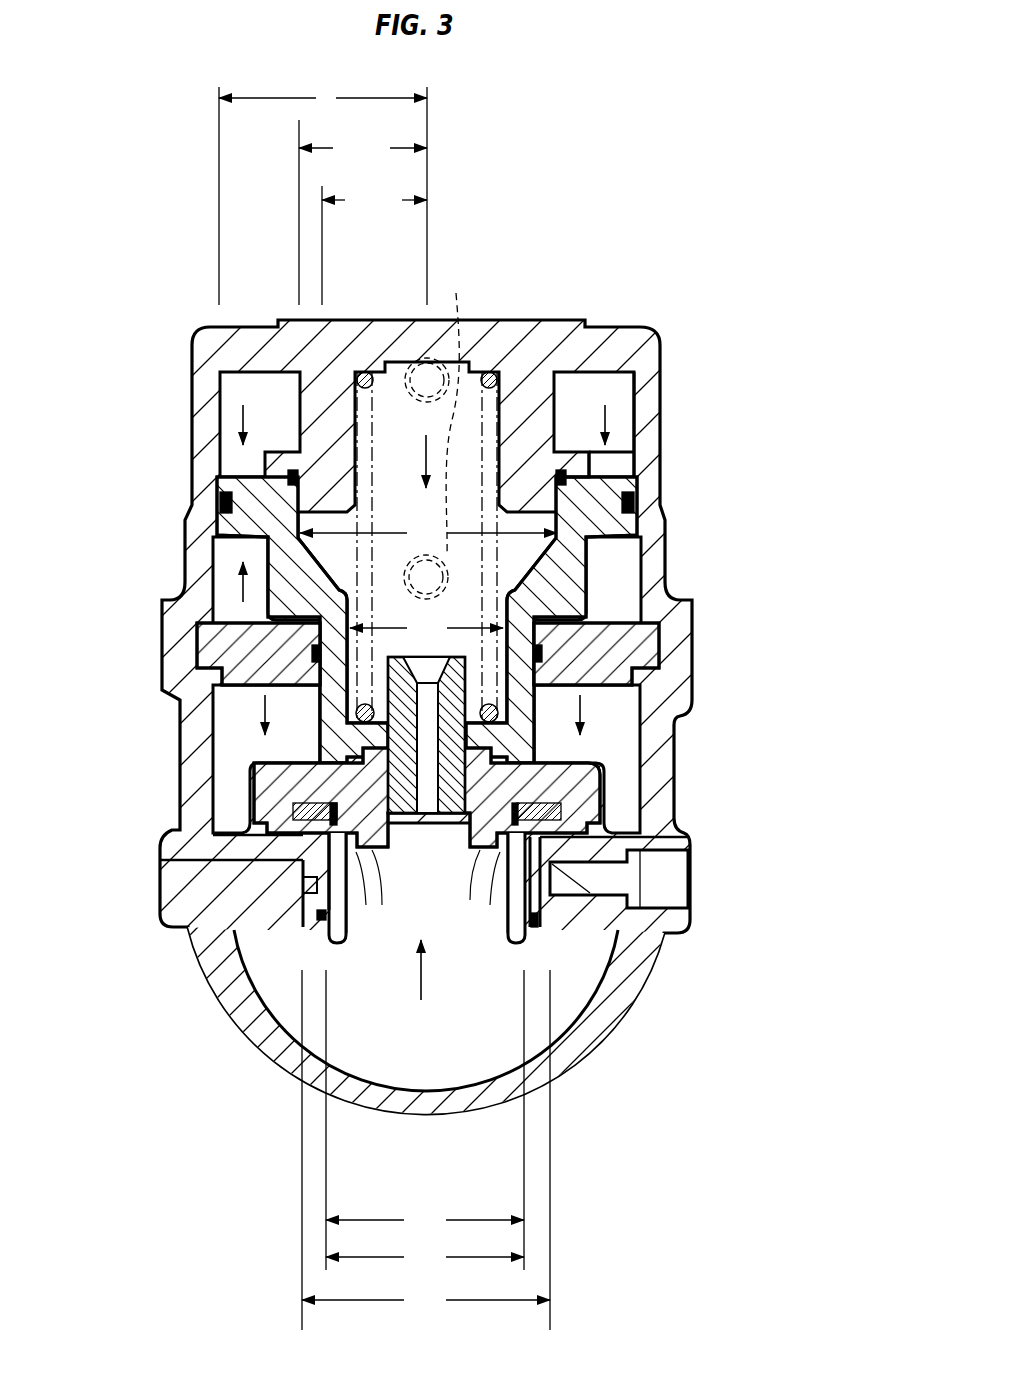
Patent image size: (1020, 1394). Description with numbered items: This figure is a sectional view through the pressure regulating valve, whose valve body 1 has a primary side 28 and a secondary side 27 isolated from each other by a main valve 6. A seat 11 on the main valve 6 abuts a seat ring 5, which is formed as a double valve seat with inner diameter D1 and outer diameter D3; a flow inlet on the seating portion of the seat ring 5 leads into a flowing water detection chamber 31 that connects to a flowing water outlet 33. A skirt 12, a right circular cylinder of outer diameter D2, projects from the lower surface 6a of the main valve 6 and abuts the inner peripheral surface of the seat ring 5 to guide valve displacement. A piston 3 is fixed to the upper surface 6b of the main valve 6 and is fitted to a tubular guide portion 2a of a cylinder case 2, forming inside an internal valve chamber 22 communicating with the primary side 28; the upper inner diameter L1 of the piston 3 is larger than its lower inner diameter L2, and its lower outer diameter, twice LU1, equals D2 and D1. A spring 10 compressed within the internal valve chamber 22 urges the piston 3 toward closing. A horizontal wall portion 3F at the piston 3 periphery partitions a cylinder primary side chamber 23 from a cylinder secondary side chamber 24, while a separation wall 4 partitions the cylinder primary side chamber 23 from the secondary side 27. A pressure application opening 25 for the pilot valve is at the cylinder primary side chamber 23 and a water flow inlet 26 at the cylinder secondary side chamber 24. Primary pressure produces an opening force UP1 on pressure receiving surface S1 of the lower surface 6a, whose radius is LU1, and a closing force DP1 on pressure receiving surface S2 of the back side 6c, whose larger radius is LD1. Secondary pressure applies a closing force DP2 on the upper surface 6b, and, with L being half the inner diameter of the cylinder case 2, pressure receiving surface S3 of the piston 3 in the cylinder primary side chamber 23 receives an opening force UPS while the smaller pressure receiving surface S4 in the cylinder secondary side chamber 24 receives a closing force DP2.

The housing body 1 is at (187, 937).
The cylinder case 2 is at (612, 487).
The tubular guide portion 2a is at (575, 455).
The piston 3 is at (588, 440).
The horizontal wall portion 3F is at (615, 470).
The separation wall 4 is at (647, 653).
The seat ring 5 is at (532, 930).
The main valve 6 is at (517, 943).
The lower surface 6a is at (384, 945).
The upper surface 6b is at (300, 762).
The back side 6c is at (585, 582).
The spring 10 is at (375, 345).
The seat 11 is at (546, 790).
The skirt 12 is at (327, 943).
The internal valve chamber 22 is at (470, 365).
The cylinder primary side chamber 23 is at (623, 557).
The cylinder secondary side chamber 24 is at (618, 435).
The pressure application opening 25 is at (448, 467).
The water flow inlet 26 is at (439, 431).
The secondary side 27 is at (620, 710).
The primary side 28 is at (466, 1045).
The flowing water detection chamber 31 is at (660, 933).
The flowing water outlet 33 is at (677, 877).
The force in the valve closing direction DP1 is at (420, 450).
The force in the valve closing direction DP2 is at (243, 428).
The force pushing the piston in the valve opening direction UPS is at (235, 595).
The force in the valve opening direction UP1 is at (421, 1000).
The pressure receiving surface S1 is at (462, 945).
The pressure receiving surface S2 is at (310, 573).
The pressure receiving surface S3 is at (305, 638).
The pressure receiving surface S4 is at (225, 470).
The inner radius of the cylinder case L is at (323, 194).
The radius of pressure receiving surface S2 LD1 is at (363, 212).
The radius of pressure receiving surface S1 LU1 is at (374, 245).
The inner diameter at the upper portion of the piston L1 is at (428, 534).
The inner diameter at the lower portion of the piston L2 is at (426, 629).
The inner diameter of the seat ring D1 is at (425, 1258).
The outer diameter of the skirt D2 is at (425, 1120).
The outer diameter of the seat ring D3 is at (426, 1150).